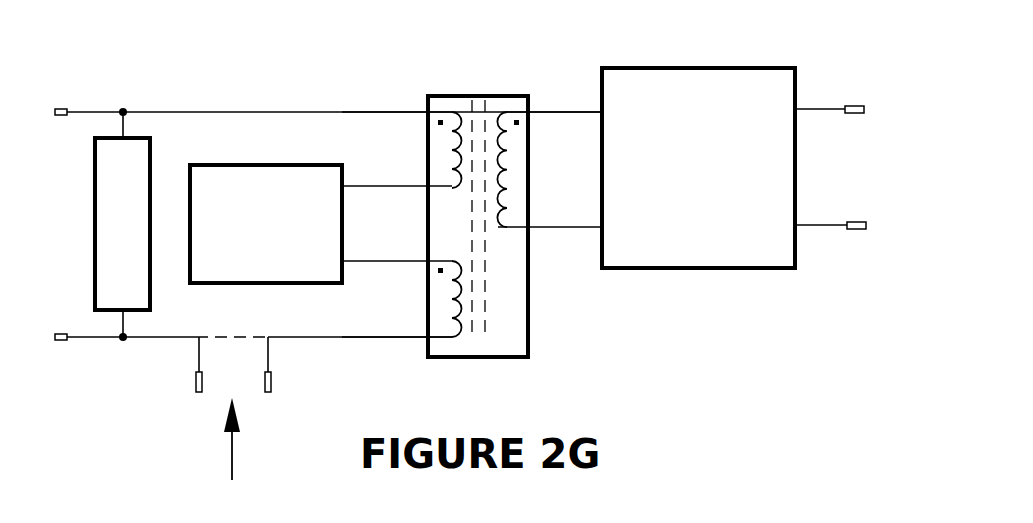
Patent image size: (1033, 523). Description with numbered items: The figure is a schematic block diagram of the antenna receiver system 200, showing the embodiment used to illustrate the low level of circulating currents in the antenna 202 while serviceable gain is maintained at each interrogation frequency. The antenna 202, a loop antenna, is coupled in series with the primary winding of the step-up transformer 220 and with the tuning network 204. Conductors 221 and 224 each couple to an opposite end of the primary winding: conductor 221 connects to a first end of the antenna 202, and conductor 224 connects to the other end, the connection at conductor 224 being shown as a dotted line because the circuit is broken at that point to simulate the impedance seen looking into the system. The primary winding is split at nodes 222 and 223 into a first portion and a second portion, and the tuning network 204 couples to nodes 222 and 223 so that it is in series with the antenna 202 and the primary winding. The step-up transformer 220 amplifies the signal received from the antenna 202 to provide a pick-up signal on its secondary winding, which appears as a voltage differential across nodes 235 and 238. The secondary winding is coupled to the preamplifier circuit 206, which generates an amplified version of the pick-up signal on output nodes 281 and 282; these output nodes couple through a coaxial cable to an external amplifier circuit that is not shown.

The antenna receiver system 200 is at (105, 59).
The antenna 202 is at (142, 296).
The tuning network 204 is at (282, 273).
The preamplifier circuit 206 is at (713, 252).
The step-up transformer 220 is at (500, 96).
The conductor 221 is at (410, 110).
The node 222 is at (410, 185).
The node 223 is at (410, 262).
The conductor 224 is at (410, 338).
The node 235 is at (546, 228).
The node 238 is at (547, 110).
The output node 281 is at (855, 100).
The output node 282 is at (858, 232).